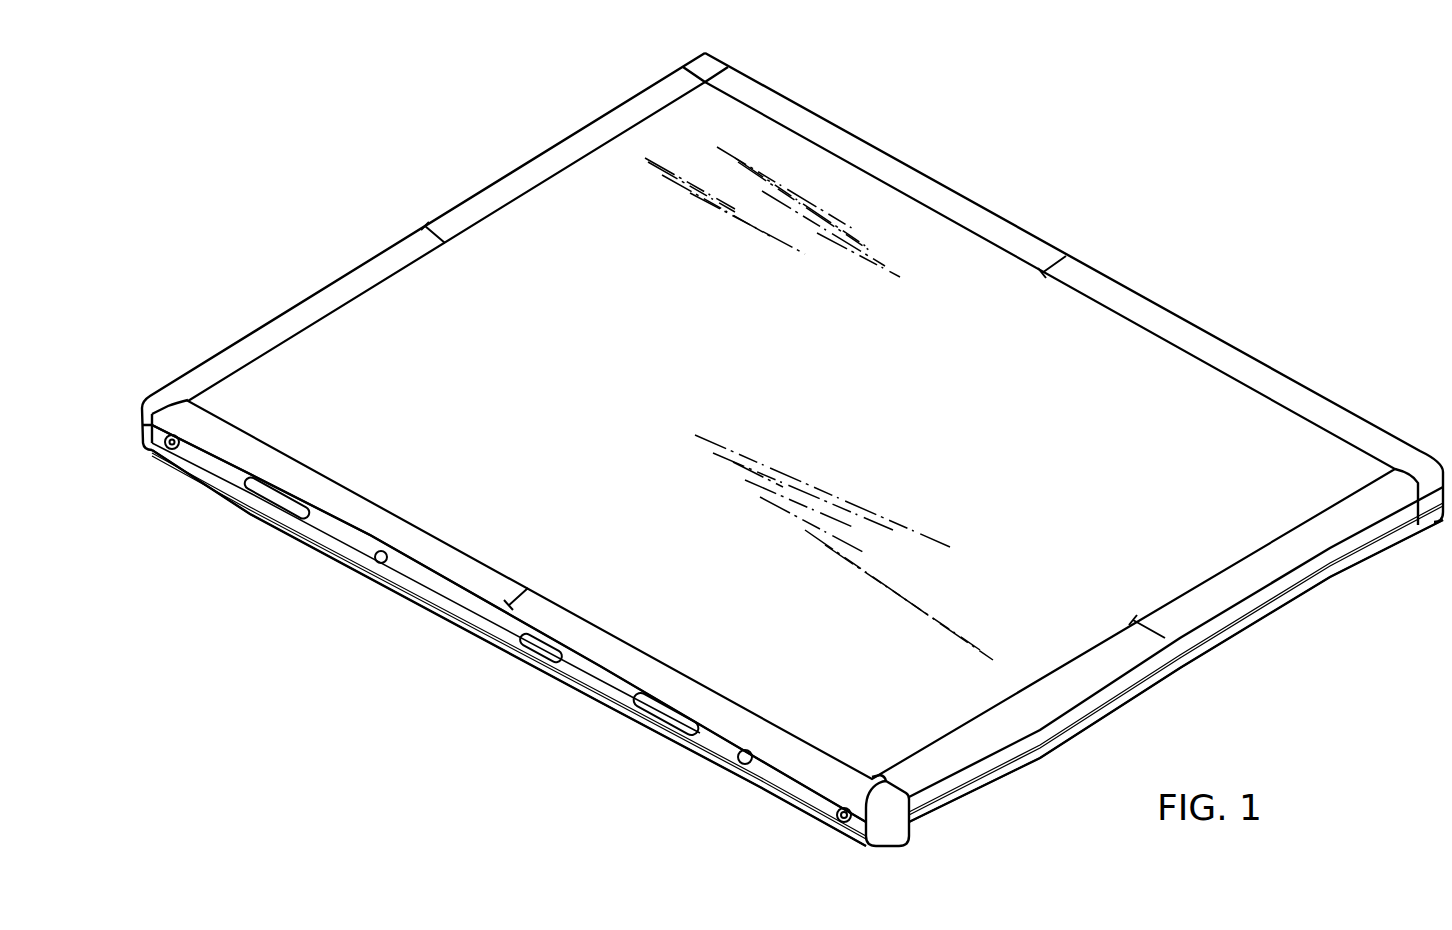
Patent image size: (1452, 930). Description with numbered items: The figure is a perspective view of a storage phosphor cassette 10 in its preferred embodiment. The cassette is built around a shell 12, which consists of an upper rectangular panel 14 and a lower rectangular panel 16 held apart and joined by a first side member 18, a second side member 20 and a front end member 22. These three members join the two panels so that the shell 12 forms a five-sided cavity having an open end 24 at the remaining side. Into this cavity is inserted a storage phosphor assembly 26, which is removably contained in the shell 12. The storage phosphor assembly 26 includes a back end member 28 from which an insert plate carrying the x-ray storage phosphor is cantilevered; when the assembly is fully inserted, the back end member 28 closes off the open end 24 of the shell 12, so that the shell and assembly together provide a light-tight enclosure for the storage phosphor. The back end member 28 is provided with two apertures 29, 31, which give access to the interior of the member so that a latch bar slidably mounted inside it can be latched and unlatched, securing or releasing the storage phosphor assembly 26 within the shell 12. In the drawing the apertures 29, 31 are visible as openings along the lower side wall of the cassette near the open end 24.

The storage phosphor cassette 10 is at (1050, 186).
The shell 12 is at (806, 96).
The upper rectangular panel 14 is at (1175, 365).
The lower rectangular panel 16 is at (1013, 773).
The first side member 18 is at (385, 262).
The second side member 20 is at (1200, 610).
The front end member 22 is at (885, 162).
The open end 24 is at (695, 690).
The storage phosphor assembly 26 is at (745, 790).
The back end member 28 is at (802, 793).
The aperture 29 is at (276, 500).
The aperture 31 is at (540, 660).